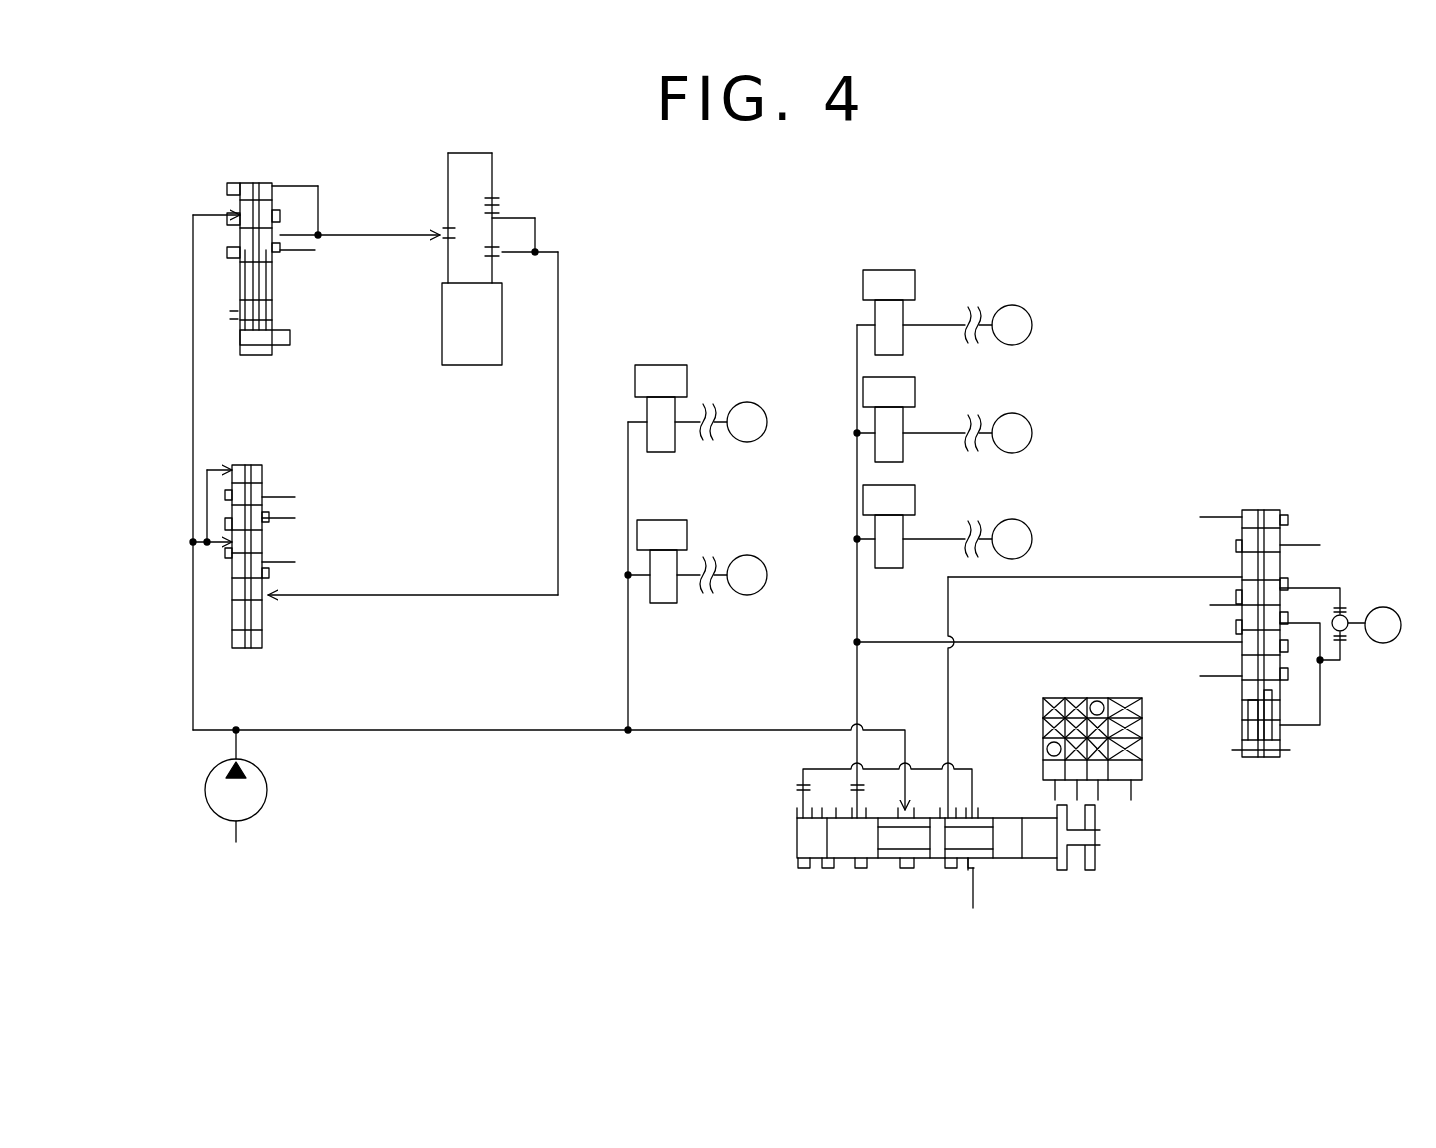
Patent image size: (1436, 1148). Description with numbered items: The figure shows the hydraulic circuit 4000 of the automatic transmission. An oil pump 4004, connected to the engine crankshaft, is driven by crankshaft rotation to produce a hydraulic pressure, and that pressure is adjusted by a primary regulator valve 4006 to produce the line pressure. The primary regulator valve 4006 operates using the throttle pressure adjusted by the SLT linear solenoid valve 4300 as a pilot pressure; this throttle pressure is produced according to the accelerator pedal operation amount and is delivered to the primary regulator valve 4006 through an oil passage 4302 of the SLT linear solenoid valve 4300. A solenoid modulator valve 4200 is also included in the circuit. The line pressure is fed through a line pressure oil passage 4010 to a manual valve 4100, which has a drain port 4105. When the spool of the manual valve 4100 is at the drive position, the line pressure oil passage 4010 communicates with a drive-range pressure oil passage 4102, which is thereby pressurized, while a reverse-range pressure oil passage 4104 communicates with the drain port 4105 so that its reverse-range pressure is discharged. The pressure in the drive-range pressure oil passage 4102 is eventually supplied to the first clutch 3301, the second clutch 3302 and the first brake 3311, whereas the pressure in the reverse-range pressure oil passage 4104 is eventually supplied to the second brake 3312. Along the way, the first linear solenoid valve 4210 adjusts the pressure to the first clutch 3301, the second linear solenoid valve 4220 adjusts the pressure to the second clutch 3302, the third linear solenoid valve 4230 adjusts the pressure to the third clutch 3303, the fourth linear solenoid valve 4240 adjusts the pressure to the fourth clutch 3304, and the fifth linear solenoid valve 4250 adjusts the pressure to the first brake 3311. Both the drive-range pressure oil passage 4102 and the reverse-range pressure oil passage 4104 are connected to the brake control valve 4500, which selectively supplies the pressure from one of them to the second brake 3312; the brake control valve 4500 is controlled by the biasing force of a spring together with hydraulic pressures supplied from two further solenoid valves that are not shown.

The hydraulic circuit 4000 is at (820, 204).
The oil pump 4004 is at (268, 780).
The primary regulator valve 4006 is at (240, 652).
The line pressure oil passage 4010 is at (310, 700).
The manual valve 4100 is at (792, 846).
The D-range pressure oil passage 4102 is at (1118, 616).
The R-range pressure oil passage 4104 is at (1110, 575).
The drain port 4105 is at (980, 870).
The solenoid modulator valve 4200 is at (252, 365).
The SL1 linear solenoid valve 4210 is at (915, 288).
The SL2 linear solenoid valve 4220 is at (915, 395).
The SL3 linear solenoid valve 4230 is at (660, 365).
The SL4 linear solenoid valve 4240 is at (662, 520).
The SL5 linear solenoid valve 4250 is at (915, 502).
The SLT linear solenoid valve 4300 is at (442, 314).
The oil passage 4302 is at (511, 597).
The B2 control valve 4500 is at (1302, 515).
The C1 clutch 3301 is at (1018, 305).
The C2 clutch 3302 is at (1018, 413).
The C3 clutch 3303 is at (755, 403).
The C4 clutch 3304 is at (755, 556).
The B1 brake 3311 is at (1018, 519).
The B2 brake 3312 is at (1384, 646).